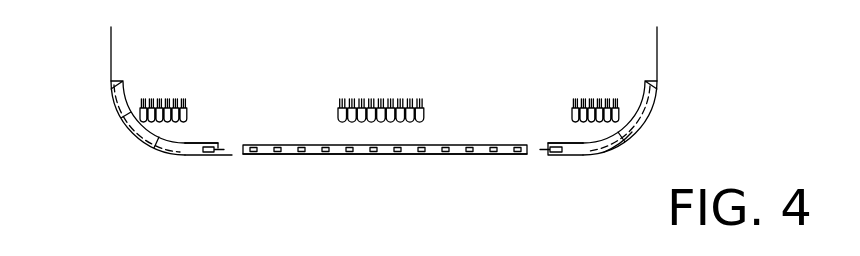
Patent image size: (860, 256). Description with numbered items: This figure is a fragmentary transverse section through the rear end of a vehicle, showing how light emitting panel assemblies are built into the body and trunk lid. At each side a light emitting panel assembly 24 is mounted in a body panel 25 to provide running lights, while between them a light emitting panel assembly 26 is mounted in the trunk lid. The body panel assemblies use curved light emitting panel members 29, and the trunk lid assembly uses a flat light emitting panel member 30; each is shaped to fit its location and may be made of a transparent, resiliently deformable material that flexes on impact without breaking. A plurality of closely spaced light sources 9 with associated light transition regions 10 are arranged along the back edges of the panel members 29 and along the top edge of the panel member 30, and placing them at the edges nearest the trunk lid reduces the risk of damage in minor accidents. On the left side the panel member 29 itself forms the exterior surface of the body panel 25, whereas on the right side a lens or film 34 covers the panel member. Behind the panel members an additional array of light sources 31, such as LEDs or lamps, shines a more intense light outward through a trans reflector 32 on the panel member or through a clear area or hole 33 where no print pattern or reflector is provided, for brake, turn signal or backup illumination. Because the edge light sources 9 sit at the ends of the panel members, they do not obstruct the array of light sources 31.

The light source 9 is at (215, 152).
The light transition region 10 is at (193, 155).
The light emitting panel assembly 24 is at (137, 143).
The body panel 25 is at (111, 66).
The light emitting panel assembly 26 is at (407, 156).
The light emitting panel member 29 is at (128, 133).
The light emitting panel member 30 is at (452, 145).
The array of light sources 31 is at (156, 98).
The trans reflector 32 is at (190, 143).
The clear area or hole 33 is at (570, 143).
The lens or film 34 is at (640, 137).